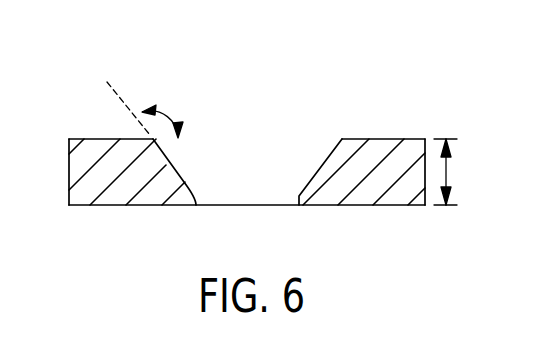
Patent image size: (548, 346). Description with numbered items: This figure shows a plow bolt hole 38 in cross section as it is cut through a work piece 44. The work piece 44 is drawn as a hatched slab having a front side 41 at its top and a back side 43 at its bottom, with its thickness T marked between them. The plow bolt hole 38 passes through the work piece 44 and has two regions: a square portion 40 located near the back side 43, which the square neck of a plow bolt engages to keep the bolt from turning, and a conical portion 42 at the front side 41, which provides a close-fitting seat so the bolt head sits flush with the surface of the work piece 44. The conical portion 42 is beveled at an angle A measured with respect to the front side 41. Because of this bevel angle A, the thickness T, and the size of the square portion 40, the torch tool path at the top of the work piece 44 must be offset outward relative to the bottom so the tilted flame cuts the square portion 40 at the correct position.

The plow bolt hole 38 is at (272, 110).
The square portion 40 is at (296, 200).
The front side 41 is at (89, 139).
The conical portion 42 is at (330, 156).
The back side 43 is at (111, 206).
The work piece 44 is at (398, 163).
The bevel angle A is at (160, 112).
The thickness T is at (448, 172).